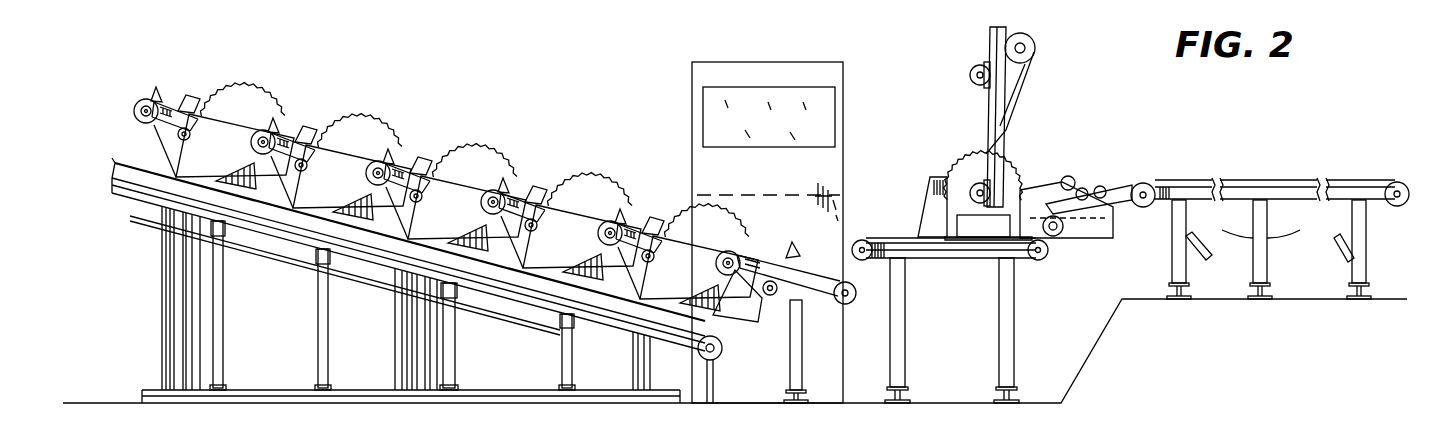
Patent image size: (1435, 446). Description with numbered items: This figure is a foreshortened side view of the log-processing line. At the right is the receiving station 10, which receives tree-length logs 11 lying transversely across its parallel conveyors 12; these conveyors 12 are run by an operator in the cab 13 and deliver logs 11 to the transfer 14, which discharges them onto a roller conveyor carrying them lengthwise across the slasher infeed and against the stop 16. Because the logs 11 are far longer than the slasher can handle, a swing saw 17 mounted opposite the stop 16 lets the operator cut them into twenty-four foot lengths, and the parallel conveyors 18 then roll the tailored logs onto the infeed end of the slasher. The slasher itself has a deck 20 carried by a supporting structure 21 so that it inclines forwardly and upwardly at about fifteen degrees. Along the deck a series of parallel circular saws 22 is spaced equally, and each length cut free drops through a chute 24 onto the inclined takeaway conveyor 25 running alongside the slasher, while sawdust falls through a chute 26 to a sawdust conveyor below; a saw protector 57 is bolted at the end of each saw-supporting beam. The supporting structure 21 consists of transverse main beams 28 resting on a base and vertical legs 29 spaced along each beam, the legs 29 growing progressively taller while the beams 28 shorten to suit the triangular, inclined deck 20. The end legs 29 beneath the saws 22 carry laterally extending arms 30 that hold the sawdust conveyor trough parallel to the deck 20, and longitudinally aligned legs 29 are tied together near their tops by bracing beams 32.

The receiving station 10 is at (1312, 166).
The tree-length logs 11 is at (1095, 178).
The parallel conveyors 12 is at (1374, 178).
The cab 13 is at (690, 86).
The transfer 14 is at (1076, 226).
The stop 16 is at (982, 230).
The swing saw 17 is at (960, 145).
The parallel conveyors 18 is at (892, 226).
The deck 20 is at (172, 90).
The supporting structure 21 is at (154, 306).
The circular saws 22 is at (467, 157).
The chute 24 is at (320, 197).
The takeaway conveyor 25 is at (170, 189).
The sawdust chute 26 is at (352, 158).
The transverse main beams 28 is at (562, 387).
The vertical legs 29 is at (318, 340).
The laterally extending arms 30 is at (450, 303).
The bracing beams 32 is at (353, 270).
The saw protector 57 is at (305, 127).